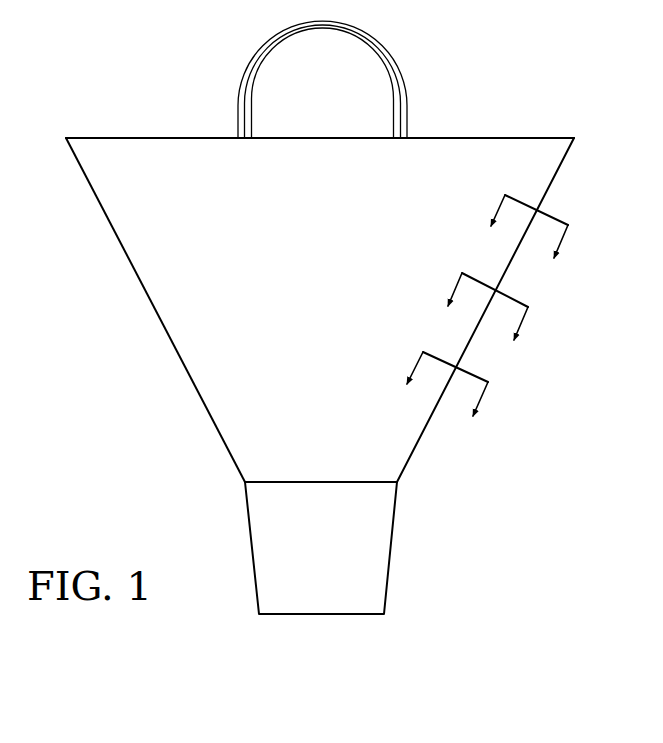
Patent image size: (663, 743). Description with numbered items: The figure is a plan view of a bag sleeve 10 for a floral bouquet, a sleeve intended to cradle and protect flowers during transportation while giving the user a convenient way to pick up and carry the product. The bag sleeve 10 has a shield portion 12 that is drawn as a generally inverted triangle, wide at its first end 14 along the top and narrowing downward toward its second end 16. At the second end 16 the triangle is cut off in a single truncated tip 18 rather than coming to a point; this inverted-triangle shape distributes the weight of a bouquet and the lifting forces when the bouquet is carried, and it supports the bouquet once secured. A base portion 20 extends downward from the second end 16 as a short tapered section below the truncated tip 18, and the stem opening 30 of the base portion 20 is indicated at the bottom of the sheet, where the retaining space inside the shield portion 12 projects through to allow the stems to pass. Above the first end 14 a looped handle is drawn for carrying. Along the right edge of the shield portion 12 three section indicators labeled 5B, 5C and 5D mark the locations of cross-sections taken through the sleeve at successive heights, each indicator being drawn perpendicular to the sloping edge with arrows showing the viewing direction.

The bag sleeve 10 is at (320, 317).
The shield portion 12 is at (148, 298).
The first end 14 is at (473, 137).
The second end 16 is at (400, 476).
The truncated tip 18 is at (245, 482).
The base portion 20 is at (390, 566).
The stem opening 30 is at (151, 742).
The section line 5B- 5B is at (521, 235).
The section line 5C- 5C is at (481, 314).
The section line 5D- 5D is at (440, 393).